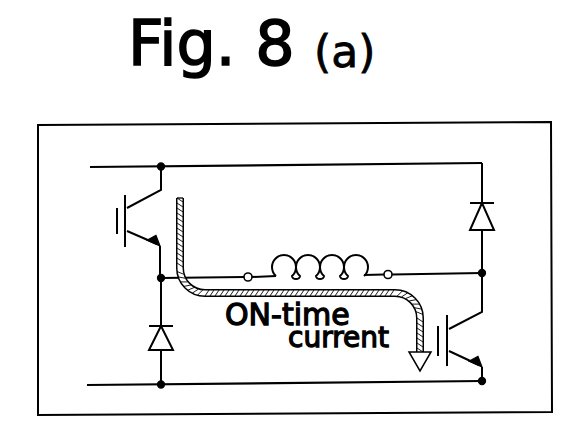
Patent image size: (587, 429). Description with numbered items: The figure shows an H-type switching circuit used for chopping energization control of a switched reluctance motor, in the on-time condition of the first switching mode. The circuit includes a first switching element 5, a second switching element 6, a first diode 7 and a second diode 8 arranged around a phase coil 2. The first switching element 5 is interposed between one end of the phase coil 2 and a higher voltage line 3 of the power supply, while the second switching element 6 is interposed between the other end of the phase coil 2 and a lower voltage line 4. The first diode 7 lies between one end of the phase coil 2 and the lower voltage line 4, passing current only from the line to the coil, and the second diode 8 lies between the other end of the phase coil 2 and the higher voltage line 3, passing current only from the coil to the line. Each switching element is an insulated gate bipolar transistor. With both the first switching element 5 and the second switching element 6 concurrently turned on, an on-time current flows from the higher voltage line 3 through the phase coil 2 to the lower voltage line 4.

The phase coil 2 is at (320, 242).
The higher voltage line 3 is at (286, 145).
The lower voltage line 4 is at (286, 364).
The first switching element 5 is at (118, 222).
The second switching element 6 is at (464, 327).
The first diode 7 is at (145, 331).
The second diode 8 is at (495, 215).